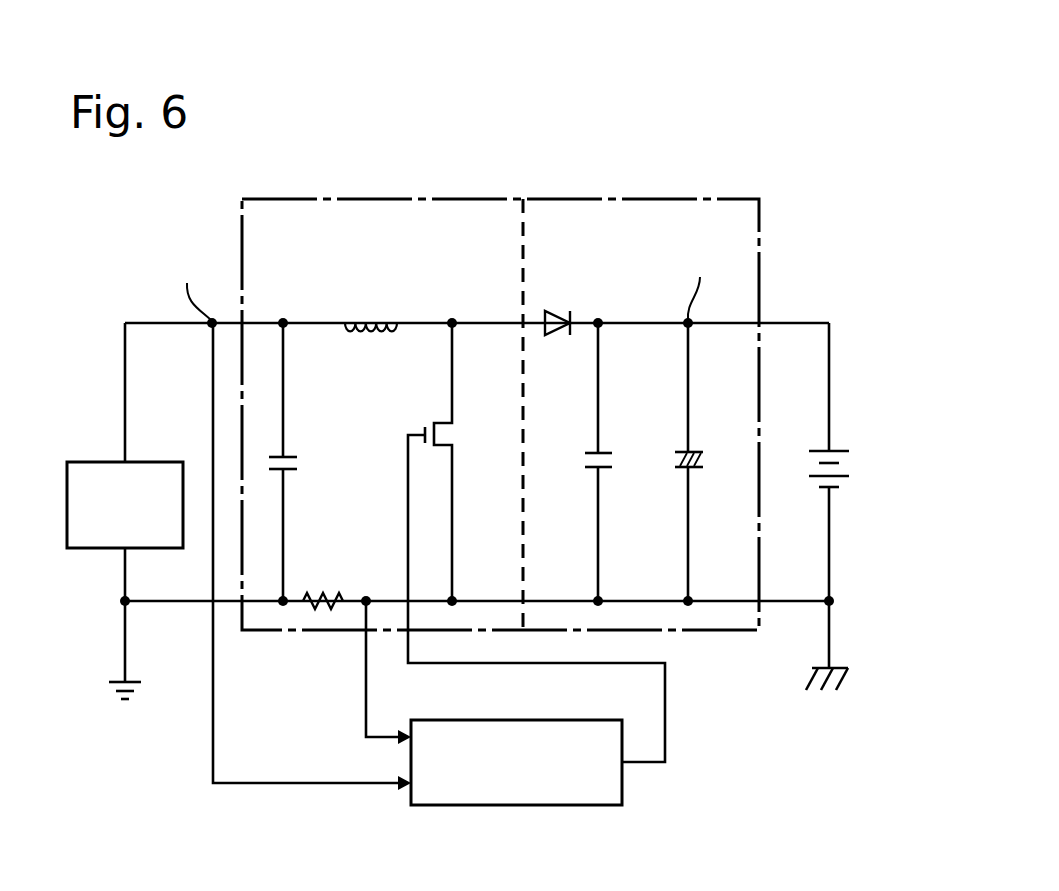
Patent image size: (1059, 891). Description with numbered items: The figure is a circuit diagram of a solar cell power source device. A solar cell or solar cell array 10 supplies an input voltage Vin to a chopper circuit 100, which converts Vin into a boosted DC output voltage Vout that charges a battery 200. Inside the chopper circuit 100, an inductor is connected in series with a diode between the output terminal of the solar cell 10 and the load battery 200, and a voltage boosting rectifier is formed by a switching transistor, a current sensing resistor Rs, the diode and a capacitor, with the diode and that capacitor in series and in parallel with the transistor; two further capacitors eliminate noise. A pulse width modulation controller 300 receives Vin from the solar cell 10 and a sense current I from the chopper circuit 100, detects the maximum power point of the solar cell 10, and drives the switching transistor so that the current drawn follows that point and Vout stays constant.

The solar cell 10 is at (97, 462).
The chopper circuit 100 is at (440, 199).
The battery 200 is at (843, 444).
The pulse width modulation (PWM) controller 300 is at (622, 793).